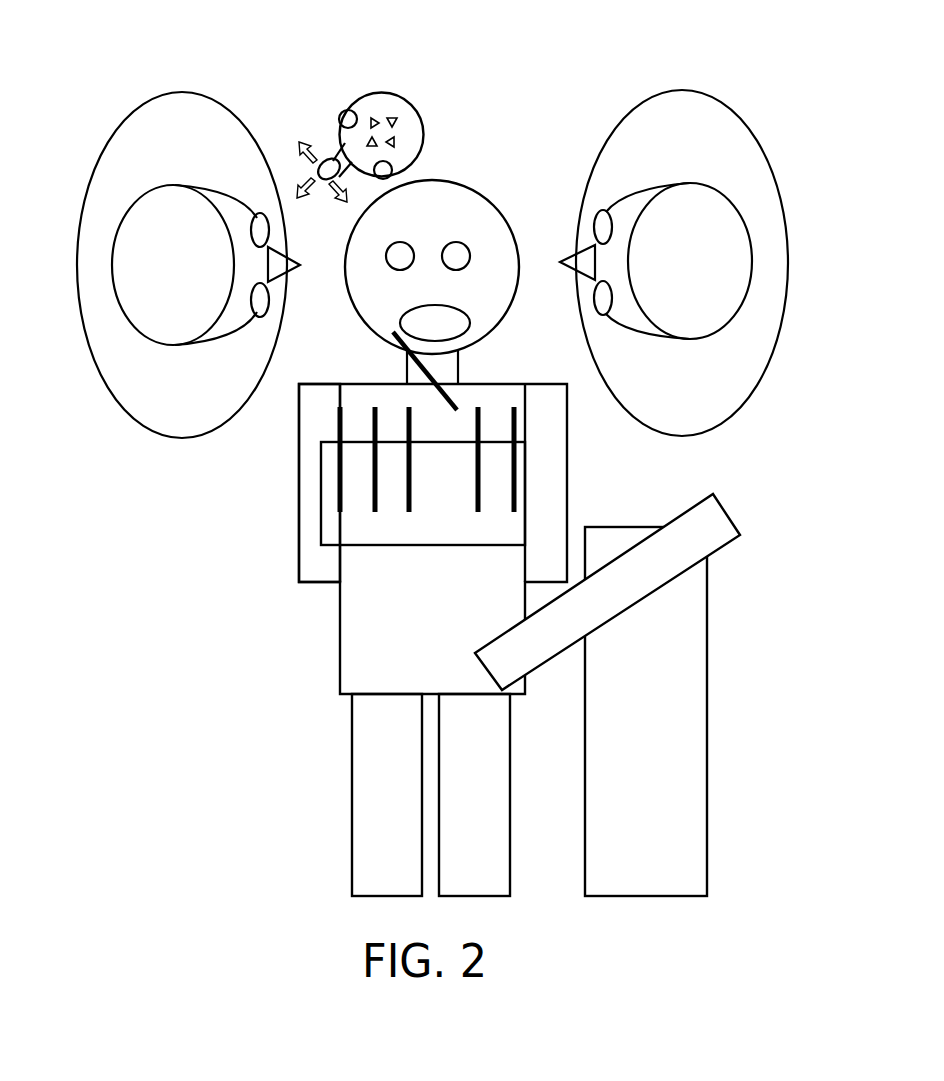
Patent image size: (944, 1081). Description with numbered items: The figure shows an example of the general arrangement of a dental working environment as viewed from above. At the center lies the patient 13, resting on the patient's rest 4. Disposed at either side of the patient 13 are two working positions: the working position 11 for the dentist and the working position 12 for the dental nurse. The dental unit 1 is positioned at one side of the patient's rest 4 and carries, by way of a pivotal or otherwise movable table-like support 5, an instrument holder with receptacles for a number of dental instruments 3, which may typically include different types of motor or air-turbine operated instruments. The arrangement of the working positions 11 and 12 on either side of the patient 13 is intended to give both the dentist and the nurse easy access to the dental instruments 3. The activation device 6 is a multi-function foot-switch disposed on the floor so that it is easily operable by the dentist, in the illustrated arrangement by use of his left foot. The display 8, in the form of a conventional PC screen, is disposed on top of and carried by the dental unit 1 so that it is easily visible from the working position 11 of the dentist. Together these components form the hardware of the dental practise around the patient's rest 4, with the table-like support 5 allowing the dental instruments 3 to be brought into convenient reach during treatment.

The dental unit 1 is at (650, 830).
The dental instruments 3 is at (444, 384).
The patient's rest 4 is at (506, 375).
The table-like support 5 is at (352, 527).
The activation device 6 is at (375, 92).
The display 8 is at (720, 548).
The working position 11 is at (112, 132).
The working position 12 is at (750, 130).
The patient 13 is at (299, 465).